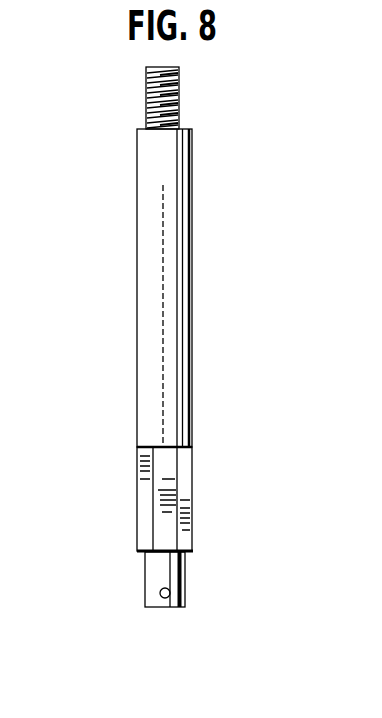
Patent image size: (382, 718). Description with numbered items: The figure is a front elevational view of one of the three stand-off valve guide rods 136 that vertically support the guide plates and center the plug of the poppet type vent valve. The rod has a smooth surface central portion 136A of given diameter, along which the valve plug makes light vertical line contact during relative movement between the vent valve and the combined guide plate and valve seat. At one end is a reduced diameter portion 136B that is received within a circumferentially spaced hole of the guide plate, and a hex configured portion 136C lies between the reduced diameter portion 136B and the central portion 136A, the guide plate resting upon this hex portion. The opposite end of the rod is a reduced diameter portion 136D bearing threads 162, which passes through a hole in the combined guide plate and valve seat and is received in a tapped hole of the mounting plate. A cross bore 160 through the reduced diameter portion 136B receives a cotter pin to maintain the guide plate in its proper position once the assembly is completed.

The stand-off valve guide rod 136 is at (130, 238).
The smooth surface central portion 136A is at (191, 268).
The reduced diameter portion 136B is at (157, 568).
The hex configured portion 136C is at (140, 488).
The threaded reduced diameter portion 136D is at (146, 68).
The cross bore 160 is at (178, 590).
The threads 162 is at (180, 85).